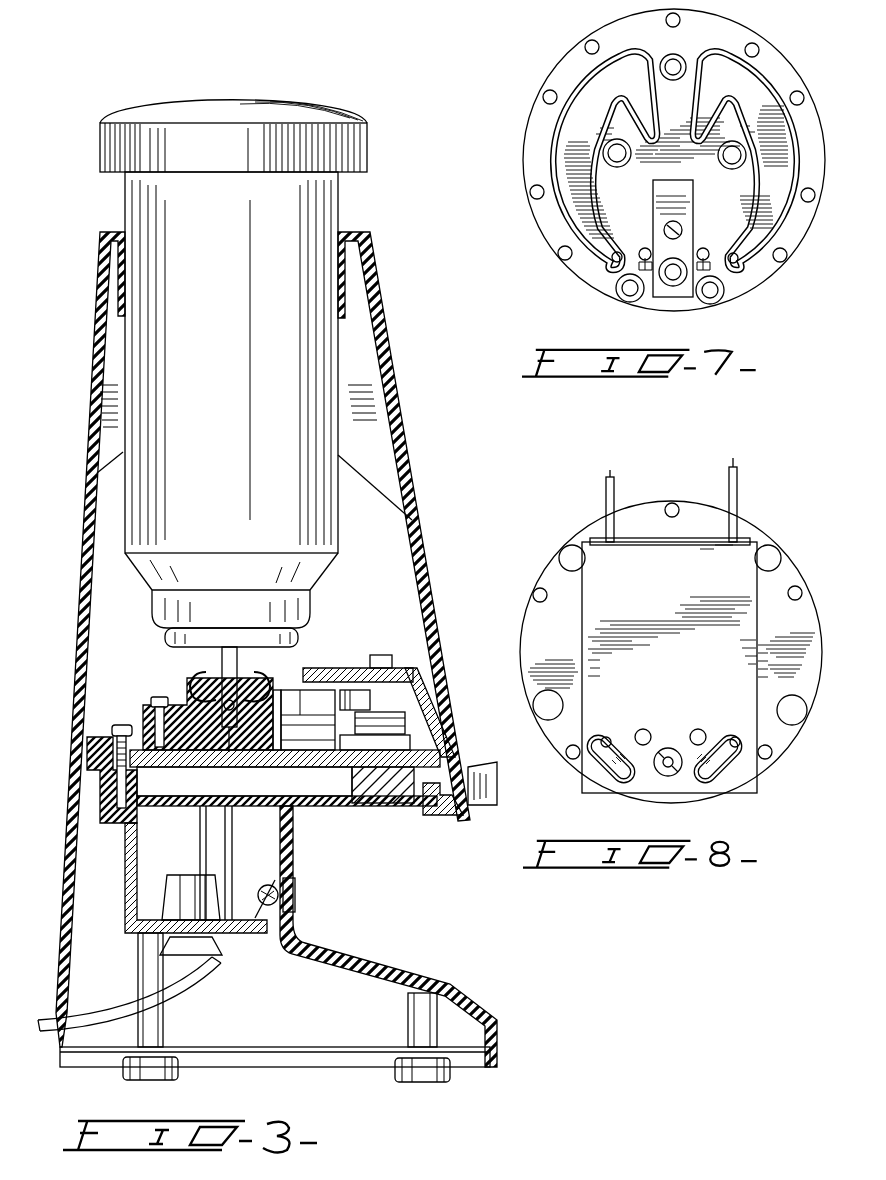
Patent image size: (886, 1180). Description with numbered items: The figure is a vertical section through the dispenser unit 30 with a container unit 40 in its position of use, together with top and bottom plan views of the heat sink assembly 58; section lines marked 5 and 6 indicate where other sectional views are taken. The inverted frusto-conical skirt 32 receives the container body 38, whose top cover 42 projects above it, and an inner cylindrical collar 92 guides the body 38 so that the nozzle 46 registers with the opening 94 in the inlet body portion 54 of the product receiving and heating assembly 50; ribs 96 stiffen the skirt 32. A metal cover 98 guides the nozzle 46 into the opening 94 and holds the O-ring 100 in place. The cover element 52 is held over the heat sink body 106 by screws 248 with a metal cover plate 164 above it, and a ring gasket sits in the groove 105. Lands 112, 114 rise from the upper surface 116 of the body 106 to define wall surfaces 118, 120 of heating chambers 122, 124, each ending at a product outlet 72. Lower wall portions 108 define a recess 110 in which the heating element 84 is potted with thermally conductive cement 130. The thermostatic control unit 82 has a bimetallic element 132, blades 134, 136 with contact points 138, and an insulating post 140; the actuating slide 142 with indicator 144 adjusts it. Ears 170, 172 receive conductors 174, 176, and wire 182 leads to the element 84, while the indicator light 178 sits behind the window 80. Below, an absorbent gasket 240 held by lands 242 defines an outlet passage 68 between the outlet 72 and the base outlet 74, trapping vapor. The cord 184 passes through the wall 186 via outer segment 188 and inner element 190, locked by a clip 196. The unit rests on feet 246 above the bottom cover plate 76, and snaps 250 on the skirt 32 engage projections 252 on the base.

In FIG. 3, the dispenser unit 30 is at (419, 426).
In FIG. 3, the skirt portion 32 is at (433, 548).
In FIG. 3, the body 38 is at (210, 251).
In FIG. 3, the container unit 40 is at (251, 373).
In FIG. 3, the top cover 42 is at (215, 164).
In FIG. 3, the nozzle 46 is at (224, 688).
In FIG. 3, the product receiving and heating assembly 50 is at (278, 812).
In FIG. 3, the product receiving and heating assembly cover element 52 is at (379, 702).
In FIG. 3, the inlet body portion 54 is at (285, 680).
In FIG. 3, the heat sink assembly 58 is at (285, 758).
In FIG. 7, the heat sink assembly 58 is at (803, 272).
In FIG. 8, the heat sink assembly 58 is at (822, 610).
In FIG. 3, the outlet passage 68 is at (384, 870).
In FIG. 3, the product outlets 72 is at (352, 789).
In FIG. 7, the product outlets 72 is at (612, 262).
In FIG. 8, the product outlets 72 is at (607, 740).
In FIG. 3, the product outlets 74 is at (386, 812).
In FIG. 3, the bottom cover plate 76 is at (227, 1062).
In FIG. 3, the window 80 is at (297, 900).
In FIG. 3, the thermostatic control unit 82 is at (430, 668).
In FIG. 7, the thermostatic control unit 82 is at (673, 297).
In FIG. 3, the heating element 84 is at (190, 781).
In FIG. 3, the collar 92 is at (348, 262).
In FIG. 3, the opening 94 is at (231, 690).
In FIG. 3, the ribs 96 is at (380, 493).
In FIG. 3, the metal cover 98 is at (210, 678).
In FIG. 3, the O-ring 100 is at (243, 682).
In FIG. 3, the groove 105 is at (108, 825).
In FIG. 3, the heat sink body 106 is at (460, 768).
In FIG. 3, the lower wall portions 108 is at (183, 800).
In FIG. 3, the recess 110 is at (244, 781).
In FIG. 7, the lands 112 is at (568, 215).
In FIG. 7, the lands 114 is at (790, 207).
In FIG. 7, the upper surface 116 is at (718, 56).
In FIG. 7, the heating chamber wall surface 118 is at (572, 145).
In FIG. 7, the heating chamber wall surface 120 is at (773, 158).
In FIG. 3, the heating chamber 122 is at (190, 722).
In FIG. 7, the heating chamber 122 is at (594, 92).
In FIG. 7, the heating chamber 124 is at (730, 78).
In FIG. 3, the thermally conductive cement 130 is at (290, 838).
In FIG. 3, the bimetallic lower element 132 is at (426, 752).
In FIG. 3, the blade 134 is at (285, 745).
In FIG. 3, the blade 136 is at (414, 718).
In FIG. 3, the contact point portions 138 is at (308, 720).
In FIG. 3, the electrically insulating post 140 is at (256, 781).
In FIG. 3, the thermostat actuating slide 142 is at (441, 736).
In FIG. 3, the indicator 144 is at (483, 806).
In FIG. 3, the metal cover plate 164 is at (366, 668).
In FIG. 7, the ear 170 is at (640, 300).
In FIG. 7, the ear 172 is at (713, 274).
In FIG. 7, the conductor 174 is at (643, 253).
In FIG. 3, the conductor 176 is at (157, 808).
In FIG. 7, the conductor 176 is at (700, 253).
In FIG. 8, the conductor 176 is at (606, 500).
In FIG. 3, the indicator light 178 is at (273, 920).
In FIG. 8, the wire 182 is at (742, 505).
In FIG. 3, the cord 184 is at (172, 993).
In FIG. 3, the wall 186 is at (120, 927).
In FIG. 3, the outer segment 188 is at (210, 957).
In FIG. 3, the inner element 190 is at (190, 885).
In FIG. 3, the clip 196 is at (134, 921).
In FIG. 3, the absorbent gasket 240 is at (366, 808).
In FIG. 8, the lands 242 is at (628, 785).
In FIG. 3, the feet 246 is at (417, 1067).
In FIG. 3, the screws 248 is at (122, 725).
In FIG. 3, the snaps 250 is at (68, 805).
In FIG. 3, the projections 252 is at (85, 778).
In FIG. 3, the section line 5- 5 is at (140, 662).
In FIG. 3, the section line 6- 6 is at (38, 824).